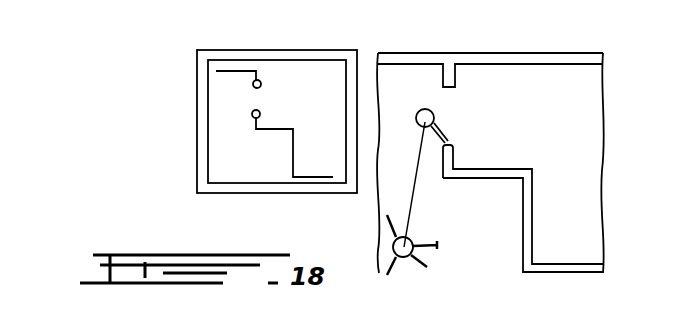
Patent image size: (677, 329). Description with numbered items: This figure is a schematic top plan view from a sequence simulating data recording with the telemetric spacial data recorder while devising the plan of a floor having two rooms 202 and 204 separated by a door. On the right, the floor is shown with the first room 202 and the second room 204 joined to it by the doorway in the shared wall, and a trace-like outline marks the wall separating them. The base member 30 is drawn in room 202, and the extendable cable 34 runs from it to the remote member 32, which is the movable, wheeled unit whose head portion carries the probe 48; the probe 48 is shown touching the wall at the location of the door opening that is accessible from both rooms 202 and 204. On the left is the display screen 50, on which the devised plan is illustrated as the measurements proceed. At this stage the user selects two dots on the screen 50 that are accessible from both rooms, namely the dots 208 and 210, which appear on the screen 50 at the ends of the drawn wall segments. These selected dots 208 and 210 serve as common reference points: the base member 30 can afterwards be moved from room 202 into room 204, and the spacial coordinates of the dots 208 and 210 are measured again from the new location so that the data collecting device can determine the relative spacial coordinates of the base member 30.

The base member 30 is at (424, 249).
The remote member 32 is at (423, 109).
The extendable cable 34 is at (418, 185).
The probe 48 is at (437, 128).
The display screen 50 is at (217, 160).
The room 202 is at (493, 245).
The room 204 is at (570, 240).
The dot 208 is at (257, 80).
The dot 210 is at (252, 113).